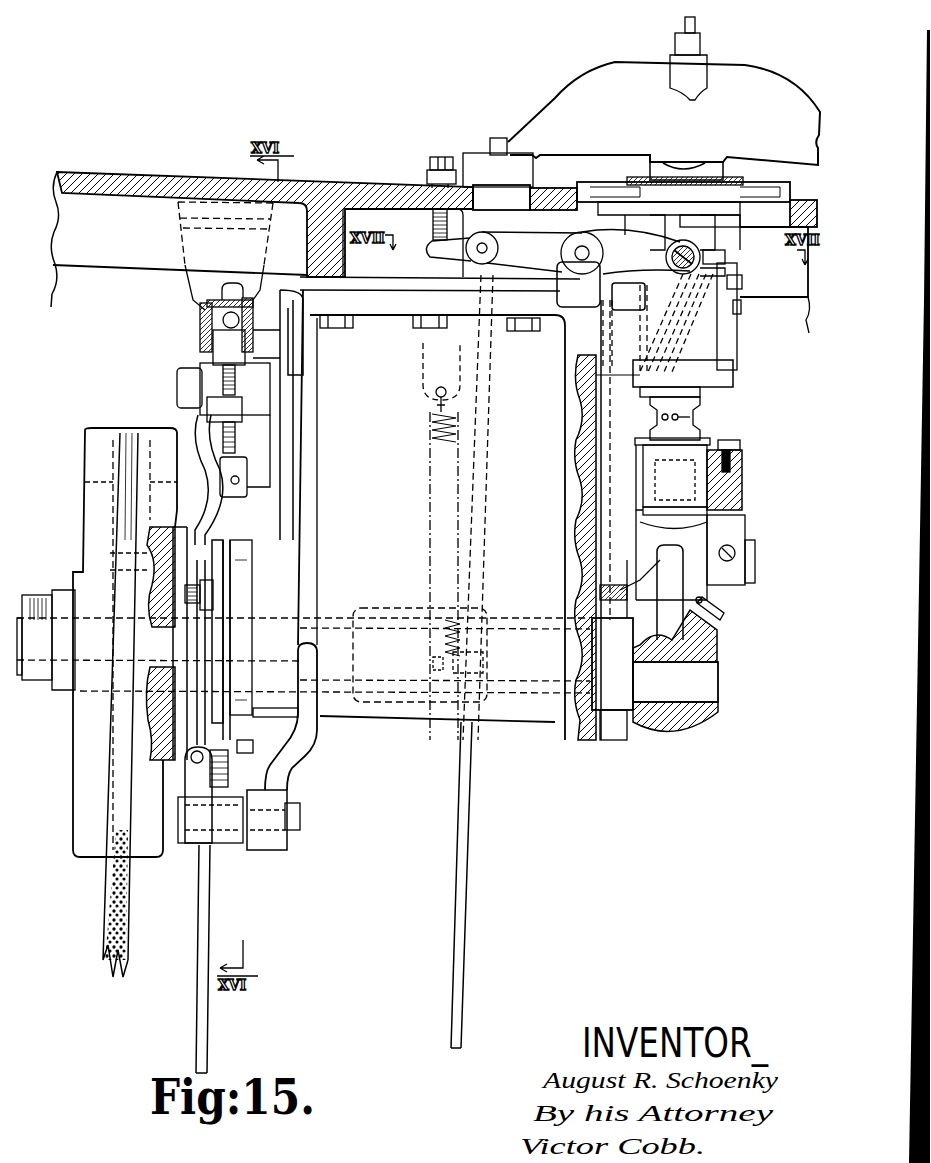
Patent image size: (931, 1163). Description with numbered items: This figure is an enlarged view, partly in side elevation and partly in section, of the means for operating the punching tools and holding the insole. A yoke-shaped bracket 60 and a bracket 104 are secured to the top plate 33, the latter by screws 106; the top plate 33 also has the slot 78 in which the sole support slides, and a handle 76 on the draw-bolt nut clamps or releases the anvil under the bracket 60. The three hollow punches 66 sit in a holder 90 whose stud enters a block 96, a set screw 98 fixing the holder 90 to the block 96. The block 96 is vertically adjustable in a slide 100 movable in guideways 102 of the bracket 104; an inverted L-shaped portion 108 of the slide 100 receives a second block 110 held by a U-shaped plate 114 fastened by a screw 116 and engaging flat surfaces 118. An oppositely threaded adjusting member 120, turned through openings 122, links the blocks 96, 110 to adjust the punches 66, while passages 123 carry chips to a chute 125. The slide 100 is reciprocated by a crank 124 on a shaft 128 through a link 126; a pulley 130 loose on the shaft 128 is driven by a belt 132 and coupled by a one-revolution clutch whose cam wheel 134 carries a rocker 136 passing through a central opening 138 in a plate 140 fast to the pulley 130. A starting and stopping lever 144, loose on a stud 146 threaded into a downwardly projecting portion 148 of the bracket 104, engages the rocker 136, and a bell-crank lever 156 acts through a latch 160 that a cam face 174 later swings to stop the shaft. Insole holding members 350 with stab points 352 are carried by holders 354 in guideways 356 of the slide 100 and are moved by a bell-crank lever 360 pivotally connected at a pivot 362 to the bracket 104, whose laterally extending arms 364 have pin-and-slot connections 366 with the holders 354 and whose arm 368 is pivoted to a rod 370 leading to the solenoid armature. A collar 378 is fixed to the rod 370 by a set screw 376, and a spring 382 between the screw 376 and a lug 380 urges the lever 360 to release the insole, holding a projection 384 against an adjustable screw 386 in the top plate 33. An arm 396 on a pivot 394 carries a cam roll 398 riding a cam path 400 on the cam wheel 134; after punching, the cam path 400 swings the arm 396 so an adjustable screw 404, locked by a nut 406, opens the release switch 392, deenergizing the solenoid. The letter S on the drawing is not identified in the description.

The top plate 33 is at (168, 180).
The yoke-shaped bracket 60 is at (748, 80).
The punches 66 is at (735, 205).
The handle 76 is at (697, 24).
The slot 78 is at (673, 207).
The holder 90 is at (726, 256).
The block 96 is at (727, 273).
The set screw 98 is at (742, 284).
The slide 100 is at (628, 298).
The guideways 102 is at (580, 470).
The bracket 104 is at (490, 716).
The screws 106 is at (510, 331).
The inverted L-shaped portion 108 is at (744, 464).
The second block 110 is at (700, 485).
The U-shaped plate 114 is at (738, 451).
The screw 116 is at (728, 440).
The flat surfaces 118 is at (667, 445).
The adjusting member 120 is at (715, 390).
The openings 122 is at (695, 413).
The passages 123 is at (742, 308).
The crank 124 is at (708, 682).
The chute 125 is at (580, 392).
The link 126 is at (670, 594).
The shaft 128 is at (380, 683).
The pulley 130 is at (83, 807).
The belt 132 is at (106, 890).
The cam wheel 134 is at (224, 550).
The rocker 136 is at (187, 630).
The central opening 138 is at (167, 702).
The plate 140 is at (143, 730).
The starting and stopping lever 144 is at (300, 757).
The stud 146 is at (182, 845).
The downwardly projecting portion 148 is at (300, 786).
The bell-crank lever 156 is at (195, 790).
The latch 160 is at (224, 750).
The cam face 174 is at (218, 695).
The insole holding members 350 is at (703, 177).
The stab points 352 is at (660, 200).
The holders 354 is at (705, 238).
The guideways 356 is at (732, 330).
The bell-crank lever 360 is at (578, 284).
The pivotal connection 362 is at (575, 254).
The laterally extending arms 364 is at (640, 262).
The pin-and-slot connections 366 is at (672, 255).
The arm 368 is at (501, 197).
The rod 370 is at (468, 806).
The set screw 376 is at (436, 660).
The collar 378 is at (482, 654).
The lug 380 is at (424, 368).
The spring 382 is at (430, 462).
The projection 384 is at (452, 256).
The adjustable screw 386 is at (438, 156).
The release switch 392 is at (227, 342).
The pivotal connection 394 is at (187, 385).
The arm 396 is at (210, 463).
The cam roll 398 is at (231, 603).
The cam path 400 is at (208, 638).
The adjustable screw 404 is at (227, 378).
The nut 406 is at (220, 421).
The knurled strip S is at (735, 178).